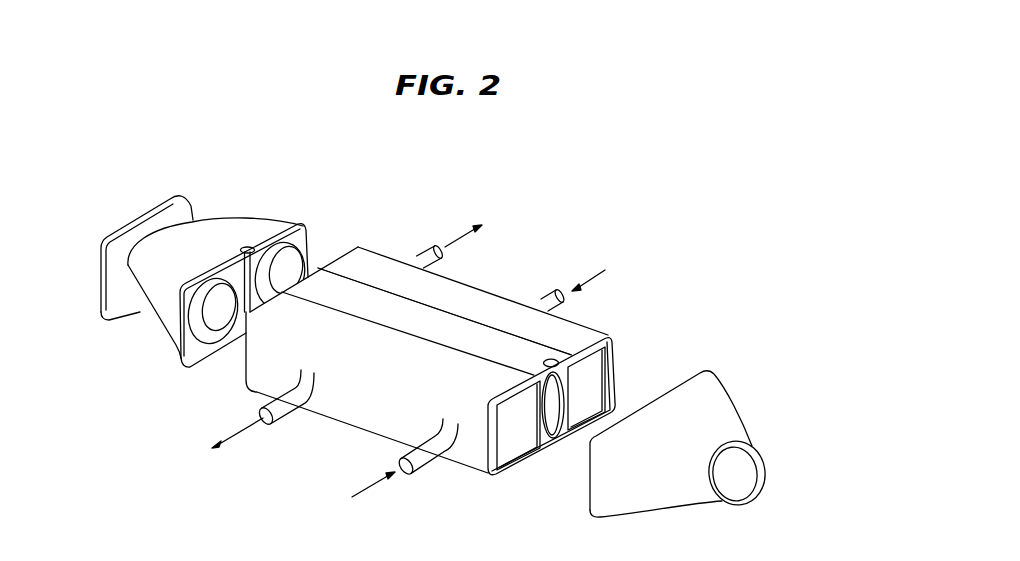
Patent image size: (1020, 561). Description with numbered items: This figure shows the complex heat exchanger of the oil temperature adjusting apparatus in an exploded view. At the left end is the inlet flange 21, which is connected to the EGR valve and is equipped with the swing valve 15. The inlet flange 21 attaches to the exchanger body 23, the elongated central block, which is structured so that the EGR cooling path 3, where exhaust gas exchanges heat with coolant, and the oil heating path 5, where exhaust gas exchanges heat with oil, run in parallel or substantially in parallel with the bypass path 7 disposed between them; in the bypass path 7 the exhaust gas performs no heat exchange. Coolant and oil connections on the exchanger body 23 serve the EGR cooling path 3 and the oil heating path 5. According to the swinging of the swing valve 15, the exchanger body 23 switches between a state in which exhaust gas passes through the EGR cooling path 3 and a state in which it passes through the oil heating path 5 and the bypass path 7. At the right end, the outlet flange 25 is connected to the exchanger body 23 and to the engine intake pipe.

The EGR cooling path 3 is at (363, 397).
The oil heating path 5 is at (477, 297).
The bypass path 7 is at (527, 352).
The swing valve 15 is at (225, 295).
The inlet flange 21 is at (228, 220).
The exchanger body 23 is at (390, 247).
The outlet flange 25 is at (730, 407).